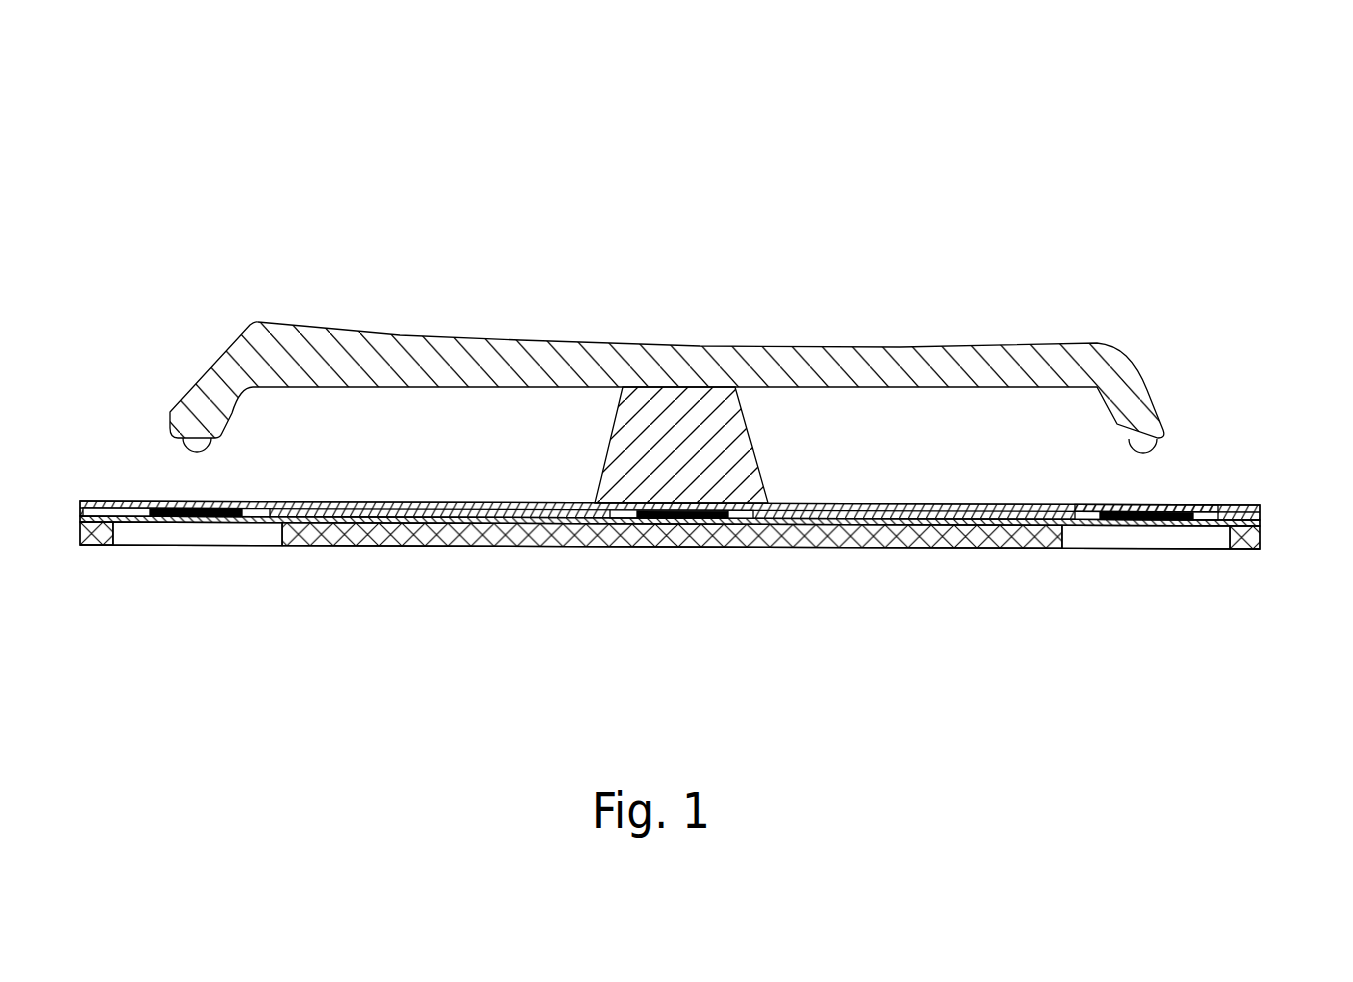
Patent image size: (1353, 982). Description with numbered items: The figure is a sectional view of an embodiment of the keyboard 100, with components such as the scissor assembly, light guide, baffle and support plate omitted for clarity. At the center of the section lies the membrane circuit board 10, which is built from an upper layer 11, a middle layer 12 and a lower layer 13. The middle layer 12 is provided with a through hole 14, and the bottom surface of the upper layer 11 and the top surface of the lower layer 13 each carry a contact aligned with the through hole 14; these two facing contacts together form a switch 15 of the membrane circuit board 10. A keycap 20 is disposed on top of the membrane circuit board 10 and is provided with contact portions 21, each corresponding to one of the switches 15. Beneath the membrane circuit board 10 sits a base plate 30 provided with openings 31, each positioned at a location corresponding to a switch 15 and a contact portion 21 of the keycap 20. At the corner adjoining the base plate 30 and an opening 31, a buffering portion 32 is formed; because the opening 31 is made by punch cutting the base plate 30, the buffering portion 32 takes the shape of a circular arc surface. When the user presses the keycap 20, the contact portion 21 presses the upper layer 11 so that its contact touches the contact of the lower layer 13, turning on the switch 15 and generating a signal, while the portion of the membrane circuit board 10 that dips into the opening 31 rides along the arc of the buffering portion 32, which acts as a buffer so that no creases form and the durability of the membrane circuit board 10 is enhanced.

The keyboard 100 is at (1056, 192).
The membrane circuit board 10 is at (116, 501).
The upper layer 11 is at (1262, 504).
The middle layer 12 is at (1262, 516).
The lower layer 13 is at (1262, 526).
The through hole 14 is at (1082, 527).
The switch 15 is at (1130, 503).
The keycap 20 is at (681, 362).
The contact portion 21 is at (205, 449).
The base plate 30 is at (644, 540).
The opening 31 is at (188, 535).
The buffering portion 32 is at (120, 524).